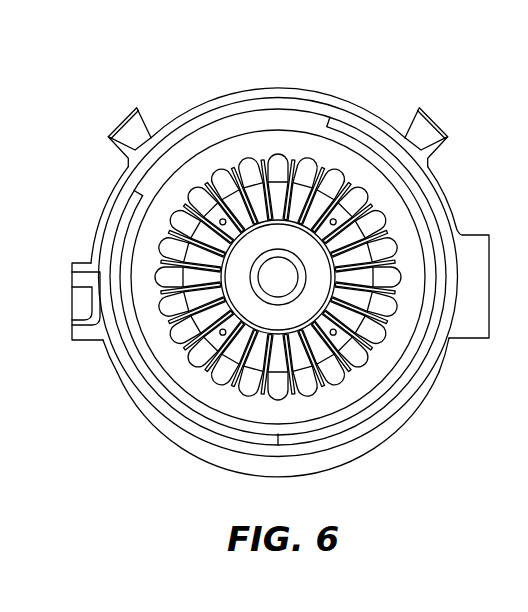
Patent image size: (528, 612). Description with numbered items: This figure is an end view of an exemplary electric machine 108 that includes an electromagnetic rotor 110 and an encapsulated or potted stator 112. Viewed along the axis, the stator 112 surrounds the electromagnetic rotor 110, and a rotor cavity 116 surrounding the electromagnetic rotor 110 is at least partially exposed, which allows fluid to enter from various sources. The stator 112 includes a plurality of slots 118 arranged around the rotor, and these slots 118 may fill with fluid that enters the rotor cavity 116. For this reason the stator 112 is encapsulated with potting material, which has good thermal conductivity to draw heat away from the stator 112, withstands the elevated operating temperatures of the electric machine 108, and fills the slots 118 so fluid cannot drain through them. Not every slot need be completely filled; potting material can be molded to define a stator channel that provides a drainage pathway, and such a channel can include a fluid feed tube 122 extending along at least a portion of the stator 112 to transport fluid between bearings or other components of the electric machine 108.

The electric machine 108 is at (430, 94).
The electromagnetic rotor 110 is at (321, 260).
The stator 112 is at (276, 120).
The rotor cavity 116 is at (225, 302).
The slots 118 is at (250, 168).
The fluid feed tube 122 is at (333, 327).